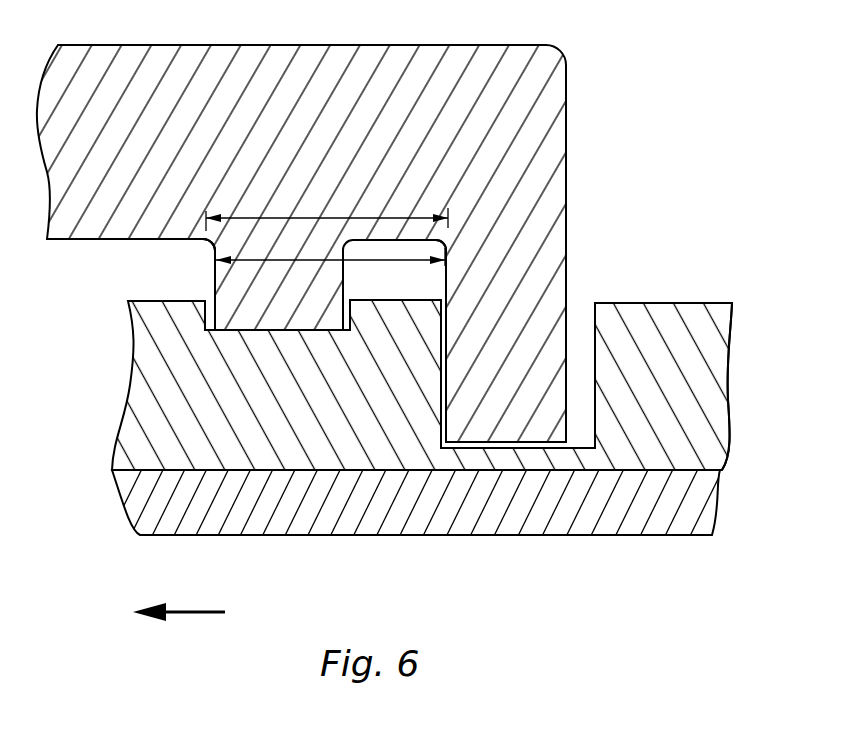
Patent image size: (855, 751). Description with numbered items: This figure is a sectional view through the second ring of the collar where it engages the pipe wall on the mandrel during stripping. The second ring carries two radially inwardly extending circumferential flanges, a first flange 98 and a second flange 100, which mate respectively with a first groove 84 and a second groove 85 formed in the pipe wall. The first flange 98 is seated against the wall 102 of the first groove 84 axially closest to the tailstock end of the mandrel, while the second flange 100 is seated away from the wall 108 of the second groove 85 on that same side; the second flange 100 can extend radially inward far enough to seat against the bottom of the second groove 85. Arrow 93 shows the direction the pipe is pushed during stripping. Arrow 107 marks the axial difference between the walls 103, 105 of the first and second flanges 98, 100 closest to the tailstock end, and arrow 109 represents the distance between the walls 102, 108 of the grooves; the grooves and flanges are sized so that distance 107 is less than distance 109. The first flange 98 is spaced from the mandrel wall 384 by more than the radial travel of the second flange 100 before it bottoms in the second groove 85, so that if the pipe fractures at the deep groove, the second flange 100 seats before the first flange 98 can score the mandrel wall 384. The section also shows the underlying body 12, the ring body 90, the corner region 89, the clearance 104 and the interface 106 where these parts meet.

The base plate 12 is at (375, 518).
The first groove 84 is at (597, 440).
The second groove 85 is at (346, 310).
The rounded edge 89 is at (555, 297).
The lower body 90 is at (133, 443).
The arrow 93 is at (180, 613).
The first flange 98 is at (500, 360).
The second flange 100 is at (283, 303).
The wall of the first groove 102 is at (446, 320).
The wall of the first flange 103 is at (446, 365).
The clearance 104 is at (500, 448).
The wall of the second flange 105 is at (207, 318).
The interface 106 is at (245, 332).
The arrow 107 is at (396, 212).
The wall of the second groove 108 is at (216, 306).
The arrow 109 is at (285, 212).
The mandrel wall 384 is at (212, 458).